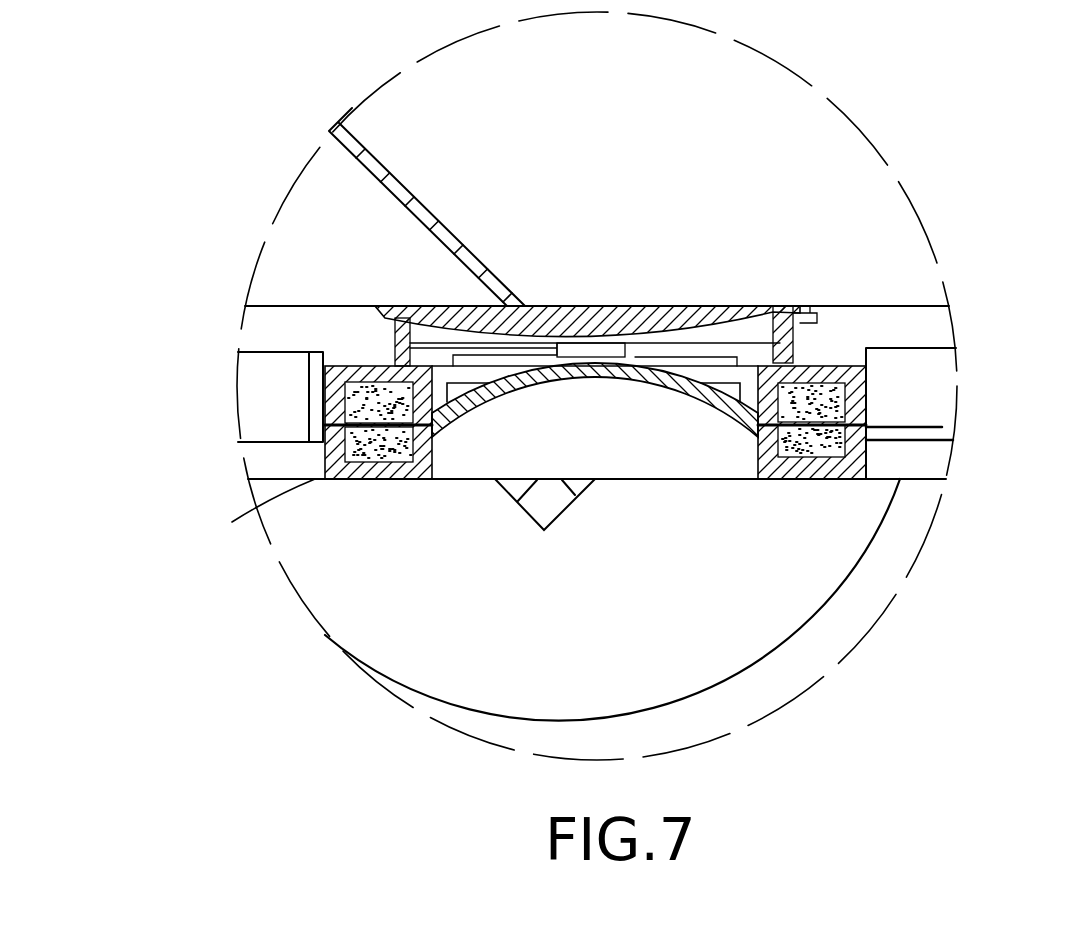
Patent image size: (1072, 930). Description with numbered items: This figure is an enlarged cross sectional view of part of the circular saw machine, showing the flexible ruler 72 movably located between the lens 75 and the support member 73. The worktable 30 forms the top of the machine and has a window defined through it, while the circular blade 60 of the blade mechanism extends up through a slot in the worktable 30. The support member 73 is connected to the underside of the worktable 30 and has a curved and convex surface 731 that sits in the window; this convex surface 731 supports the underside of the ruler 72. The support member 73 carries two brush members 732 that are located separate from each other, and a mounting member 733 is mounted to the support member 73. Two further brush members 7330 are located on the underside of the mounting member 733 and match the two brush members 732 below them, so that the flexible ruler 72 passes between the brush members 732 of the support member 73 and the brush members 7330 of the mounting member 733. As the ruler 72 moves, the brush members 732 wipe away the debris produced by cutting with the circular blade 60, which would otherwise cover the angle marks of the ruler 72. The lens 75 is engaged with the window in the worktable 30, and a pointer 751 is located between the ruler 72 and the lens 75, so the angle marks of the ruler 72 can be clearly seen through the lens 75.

The worktable 30 is at (923, 303).
The circular blade 60 is at (430, 207).
The ruler 72 is at (940, 427).
The support member 73 is at (543, 378).
The convex surface 731 is at (452, 383).
The brush members 732 is at (315, 480).
The mounting member 733 is at (822, 365).
The brush members 7330 is at (327, 412).
The lens 75 is at (625, 330).
The pointer 751 is at (735, 343).